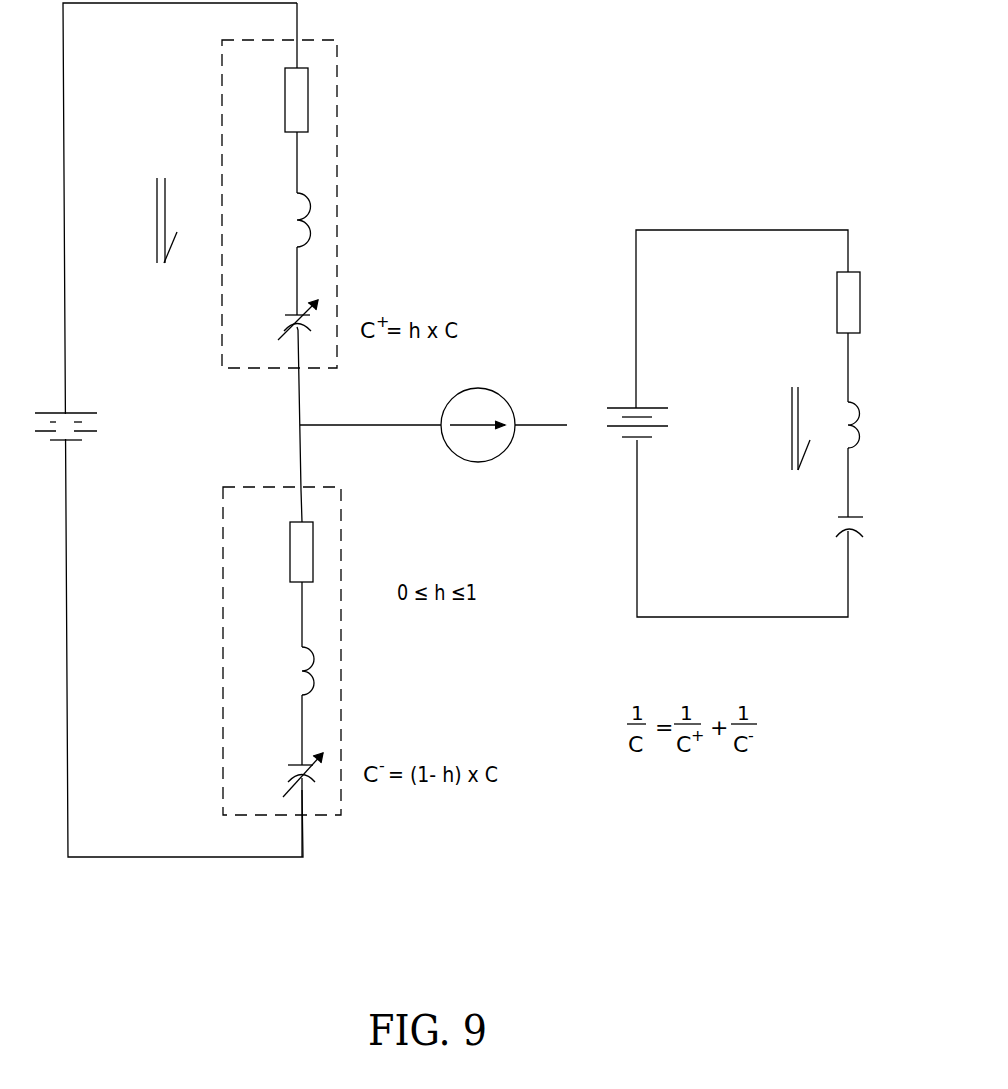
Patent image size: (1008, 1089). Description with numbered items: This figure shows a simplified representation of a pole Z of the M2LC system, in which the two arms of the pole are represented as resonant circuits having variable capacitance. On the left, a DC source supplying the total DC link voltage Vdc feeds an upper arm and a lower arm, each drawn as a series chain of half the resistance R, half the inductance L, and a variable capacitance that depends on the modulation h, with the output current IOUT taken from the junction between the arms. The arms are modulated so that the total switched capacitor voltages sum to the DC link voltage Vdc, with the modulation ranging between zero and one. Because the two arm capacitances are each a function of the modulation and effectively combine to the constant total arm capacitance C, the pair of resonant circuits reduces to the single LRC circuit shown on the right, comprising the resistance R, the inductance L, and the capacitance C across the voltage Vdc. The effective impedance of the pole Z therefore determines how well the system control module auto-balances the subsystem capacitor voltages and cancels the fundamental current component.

The resistance R is at (544, 325).
The inductance L is at (551, 444).
The total arm capacitance C is at (560, 548).
The output current IOUT is at (478, 443).
The total DC link voltage Vdc is at (364, 410).
The pole Z is at (481, 311).